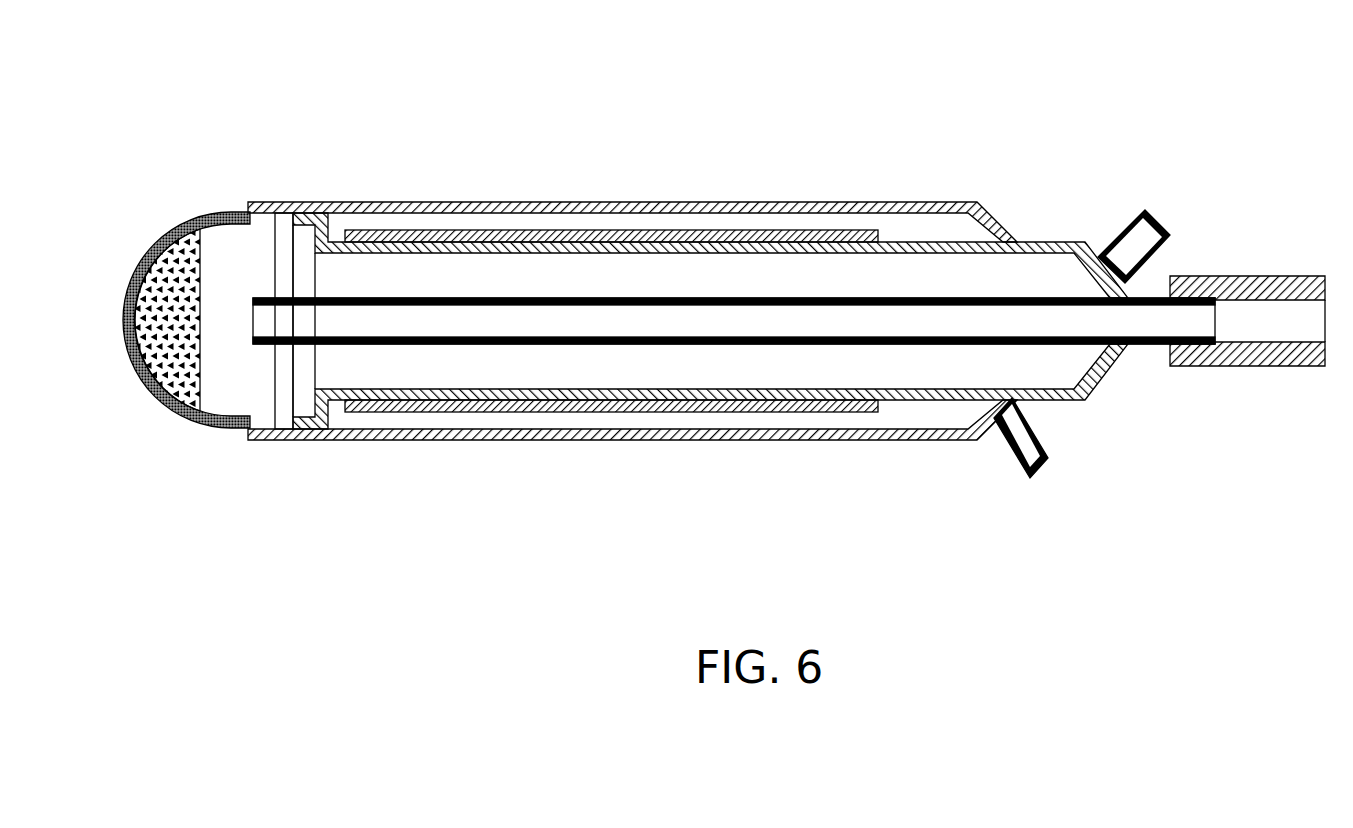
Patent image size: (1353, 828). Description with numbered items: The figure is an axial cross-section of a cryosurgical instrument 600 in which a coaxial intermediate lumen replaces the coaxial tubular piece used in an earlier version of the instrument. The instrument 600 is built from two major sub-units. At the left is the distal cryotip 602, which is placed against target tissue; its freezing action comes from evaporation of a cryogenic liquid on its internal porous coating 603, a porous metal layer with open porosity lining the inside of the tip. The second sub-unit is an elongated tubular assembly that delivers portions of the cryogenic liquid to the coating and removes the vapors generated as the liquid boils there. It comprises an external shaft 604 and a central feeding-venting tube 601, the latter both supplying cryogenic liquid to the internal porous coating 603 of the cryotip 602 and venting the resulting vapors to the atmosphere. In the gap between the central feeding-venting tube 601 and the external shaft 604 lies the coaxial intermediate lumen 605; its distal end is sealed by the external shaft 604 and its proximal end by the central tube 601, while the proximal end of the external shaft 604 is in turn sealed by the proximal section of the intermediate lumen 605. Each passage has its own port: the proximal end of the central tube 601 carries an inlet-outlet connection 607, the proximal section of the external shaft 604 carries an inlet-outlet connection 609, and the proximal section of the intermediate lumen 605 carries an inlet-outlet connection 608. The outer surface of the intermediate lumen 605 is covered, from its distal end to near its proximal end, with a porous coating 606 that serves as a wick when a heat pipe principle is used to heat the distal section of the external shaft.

The cryosurgical instrument 600 is at (711, 351).
The central feeding-venting tube 601 is at (608, 297).
The distal cryotip 602 is at (128, 275).
The internal porous coating 603 is at (190, 340).
The external shaft 604 is at (822, 442).
The coaxial intermediate lumen 605 is at (407, 231).
The porous coating 606 is at (678, 242).
The inlet-outlet connection 607 is at (1207, 366).
The inlet-outlet connection 608 is at (1113, 235).
The inlet-outlet connection 609 is at (1002, 452).